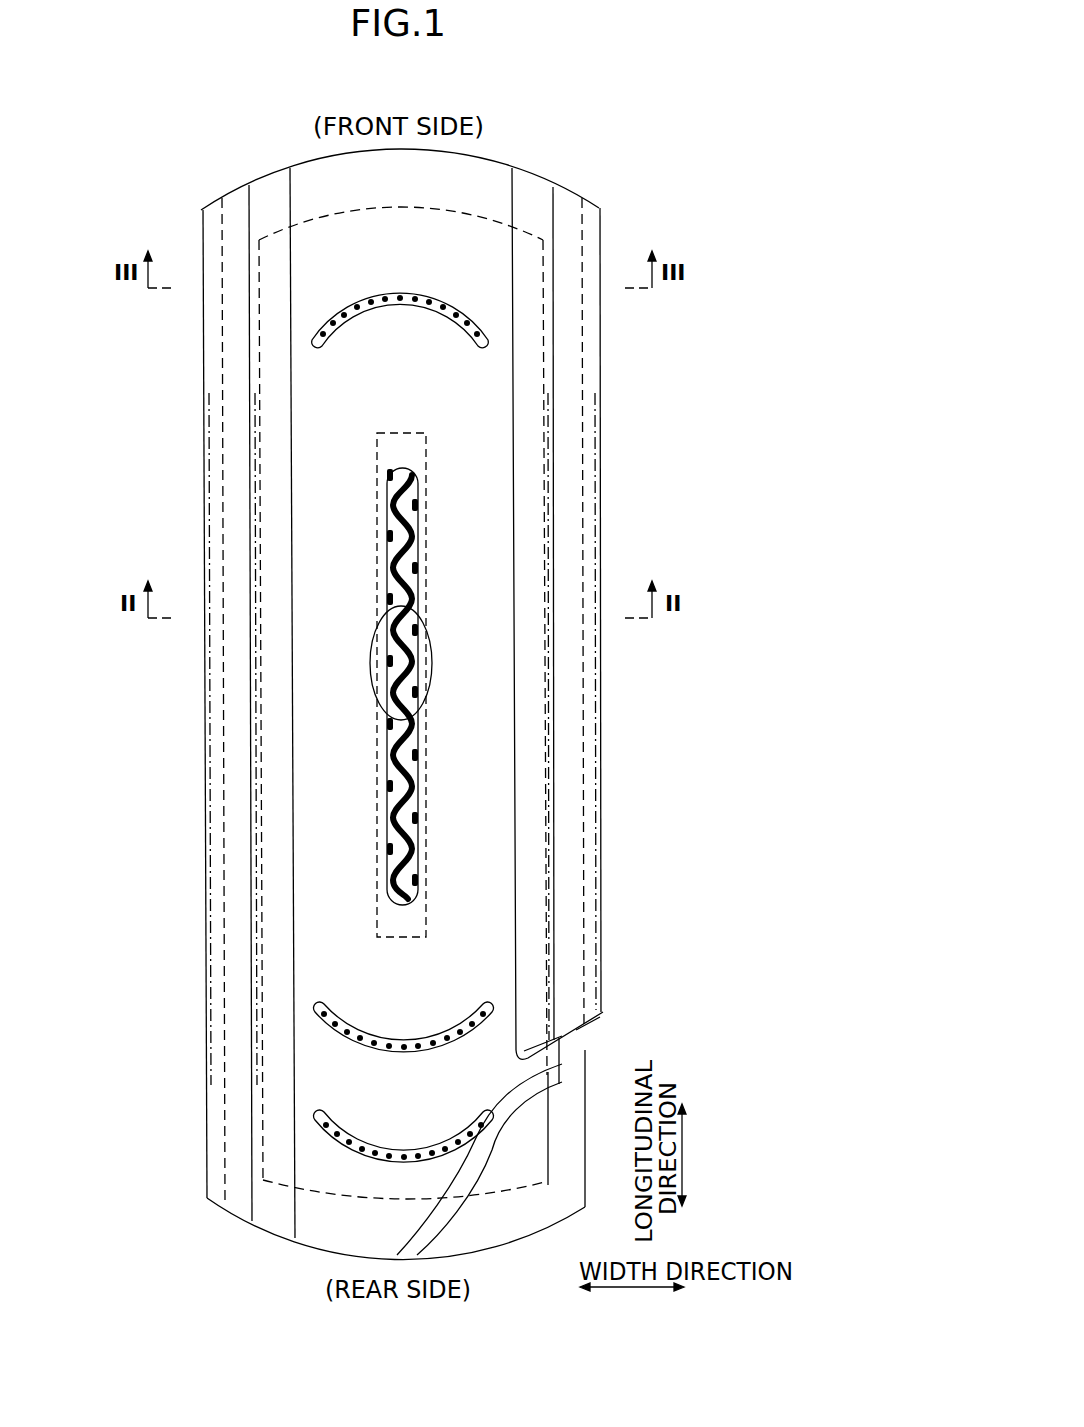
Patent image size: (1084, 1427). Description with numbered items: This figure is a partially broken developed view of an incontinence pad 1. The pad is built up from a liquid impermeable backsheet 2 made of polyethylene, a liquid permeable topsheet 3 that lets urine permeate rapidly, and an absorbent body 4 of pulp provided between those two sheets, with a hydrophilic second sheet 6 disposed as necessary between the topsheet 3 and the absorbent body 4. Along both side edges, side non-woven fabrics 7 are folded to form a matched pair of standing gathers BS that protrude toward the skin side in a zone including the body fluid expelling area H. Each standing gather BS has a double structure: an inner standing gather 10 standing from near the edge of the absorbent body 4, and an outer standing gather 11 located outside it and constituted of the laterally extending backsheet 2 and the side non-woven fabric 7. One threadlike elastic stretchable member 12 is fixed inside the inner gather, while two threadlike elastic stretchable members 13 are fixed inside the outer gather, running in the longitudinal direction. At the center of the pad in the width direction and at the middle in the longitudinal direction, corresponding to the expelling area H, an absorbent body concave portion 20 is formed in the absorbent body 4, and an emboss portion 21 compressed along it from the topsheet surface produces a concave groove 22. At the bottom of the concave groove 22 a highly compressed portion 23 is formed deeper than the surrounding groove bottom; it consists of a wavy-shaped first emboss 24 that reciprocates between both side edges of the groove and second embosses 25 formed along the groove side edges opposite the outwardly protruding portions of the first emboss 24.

The incontinence pad 1 is at (624, 183).
The liquid impermeable backsheet 2 is at (553, 1143).
The liquid permeable topsheet 3 is at (345, 1236).
The absorbent body 4 is at (515, 1155).
The hydrophilic second sheet 6 is at (440, 1193).
The side non-woven fabric 7 is at (598, 937).
The inner standing gather 10 is at (256, 521).
The outer standing gather 11 is at (200, 527).
The threadlike elastic stretchable member 12 is at (258, 703).
The threadlike elastic stretchable members 13 is at (208, 702).
The absorbent body concave portion 20 is at (430, 915).
The emboss portion 21 is at (397, 907).
The concave groove 22 is at (360, 705).
The highly compressed portion 23 is at (404, 669).
The wavy-shaped first emboss 24 is at (415, 552).
The second emboss 25 is at (418, 501).
The body fluid expelling area H is at (425, 647).
The standing gathers BS is at (184, 493).